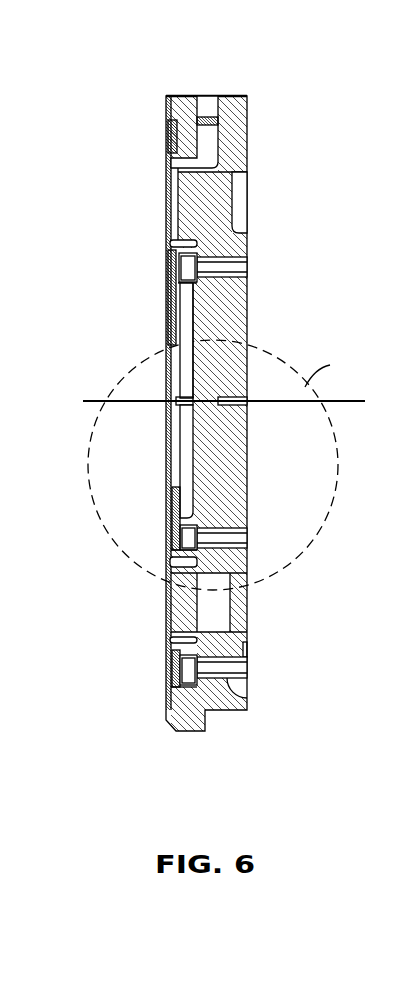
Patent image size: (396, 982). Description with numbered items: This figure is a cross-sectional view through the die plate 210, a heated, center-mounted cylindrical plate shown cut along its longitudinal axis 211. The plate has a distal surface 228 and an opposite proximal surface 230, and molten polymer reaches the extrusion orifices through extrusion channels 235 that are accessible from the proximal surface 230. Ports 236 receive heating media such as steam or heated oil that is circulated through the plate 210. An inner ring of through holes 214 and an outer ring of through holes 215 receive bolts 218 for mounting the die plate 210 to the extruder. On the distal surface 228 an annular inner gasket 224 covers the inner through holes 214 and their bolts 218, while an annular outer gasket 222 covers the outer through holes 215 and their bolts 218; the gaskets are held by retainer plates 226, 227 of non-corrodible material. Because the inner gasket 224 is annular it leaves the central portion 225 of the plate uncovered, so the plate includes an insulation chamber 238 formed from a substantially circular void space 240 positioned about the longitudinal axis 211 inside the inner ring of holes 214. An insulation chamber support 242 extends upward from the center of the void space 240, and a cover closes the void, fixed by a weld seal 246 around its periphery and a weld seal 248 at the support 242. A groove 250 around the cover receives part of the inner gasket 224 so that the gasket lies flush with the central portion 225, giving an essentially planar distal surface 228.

The die plate 210 is at (136, 71).
The longitudinal axis 211 is at (332, 403).
The through holes 214 is at (220, 252).
The through holes 215 is at (240, 695).
The bolts 218 is at (238, 267).
The outer gasket 222 is at (172, 96).
The inner gasket 224 is at (170, 292).
The central portion 225 is at (173, 448).
The retainer plate 226 is at (168, 270).
The retainer plate 227 is at (168, 128).
The distal surface 228 is at (167, 200).
The proximal surface 230 is at (238, 295).
The extrusion channels 235 is at (200, 628).
The ports 236 is at (208, 96).
The insulation chamber 238 is at (215, 380).
The void space 240 is at (215, 437).
The insulation chamber support 242 is at (196, 400).
The weld seal 246 is at (193, 515).
The weld seal 248 is at (175, 398).
The groove 250 is at (177, 332).